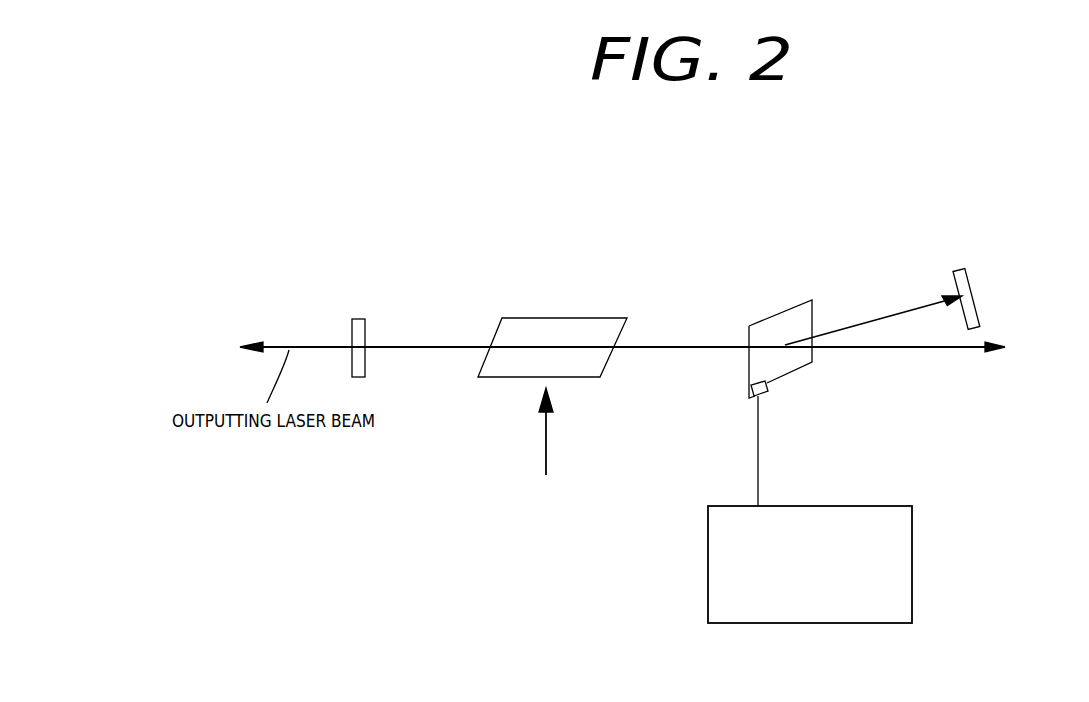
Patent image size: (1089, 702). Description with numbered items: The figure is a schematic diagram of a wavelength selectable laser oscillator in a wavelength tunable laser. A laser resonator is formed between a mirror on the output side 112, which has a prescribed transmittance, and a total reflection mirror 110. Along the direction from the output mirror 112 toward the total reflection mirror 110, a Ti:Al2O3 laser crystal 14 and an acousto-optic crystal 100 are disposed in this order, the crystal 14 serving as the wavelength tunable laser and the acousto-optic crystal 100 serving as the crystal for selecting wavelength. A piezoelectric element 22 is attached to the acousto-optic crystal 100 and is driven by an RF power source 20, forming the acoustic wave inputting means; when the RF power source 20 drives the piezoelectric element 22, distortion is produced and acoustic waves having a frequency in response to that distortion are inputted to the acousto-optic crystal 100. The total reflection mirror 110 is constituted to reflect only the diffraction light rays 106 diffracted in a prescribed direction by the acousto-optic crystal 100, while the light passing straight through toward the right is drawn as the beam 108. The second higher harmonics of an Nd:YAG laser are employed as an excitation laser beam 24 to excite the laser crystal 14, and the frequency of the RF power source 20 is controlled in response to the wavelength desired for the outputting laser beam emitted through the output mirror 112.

The Ti:Al2O3 laser crystal 14 is at (518, 328).
The mirror on the output side 112 is at (365, 330).
The acousto-optic crystal 100 is at (797, 315).
The piezoelectric element 22 is at (767, 393).
The RF power source 20 is at (898, 578).
The diffraction light rays 106 is at (880, 315).
The total reflection mirror 110 is at (966, 290).
The transmitted beam 108 is at (916, 350).
The excitation laser beam 24 is at (543, 445).